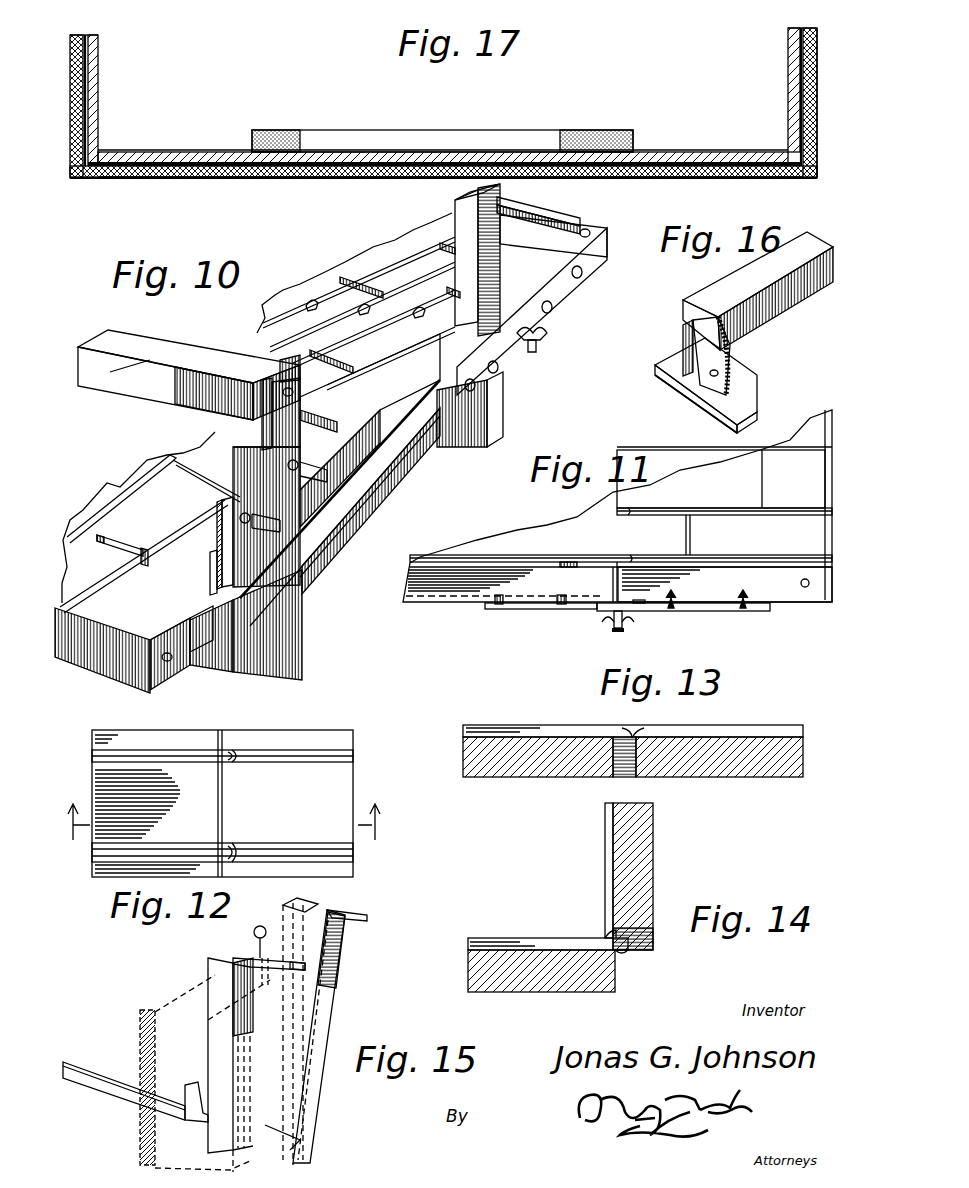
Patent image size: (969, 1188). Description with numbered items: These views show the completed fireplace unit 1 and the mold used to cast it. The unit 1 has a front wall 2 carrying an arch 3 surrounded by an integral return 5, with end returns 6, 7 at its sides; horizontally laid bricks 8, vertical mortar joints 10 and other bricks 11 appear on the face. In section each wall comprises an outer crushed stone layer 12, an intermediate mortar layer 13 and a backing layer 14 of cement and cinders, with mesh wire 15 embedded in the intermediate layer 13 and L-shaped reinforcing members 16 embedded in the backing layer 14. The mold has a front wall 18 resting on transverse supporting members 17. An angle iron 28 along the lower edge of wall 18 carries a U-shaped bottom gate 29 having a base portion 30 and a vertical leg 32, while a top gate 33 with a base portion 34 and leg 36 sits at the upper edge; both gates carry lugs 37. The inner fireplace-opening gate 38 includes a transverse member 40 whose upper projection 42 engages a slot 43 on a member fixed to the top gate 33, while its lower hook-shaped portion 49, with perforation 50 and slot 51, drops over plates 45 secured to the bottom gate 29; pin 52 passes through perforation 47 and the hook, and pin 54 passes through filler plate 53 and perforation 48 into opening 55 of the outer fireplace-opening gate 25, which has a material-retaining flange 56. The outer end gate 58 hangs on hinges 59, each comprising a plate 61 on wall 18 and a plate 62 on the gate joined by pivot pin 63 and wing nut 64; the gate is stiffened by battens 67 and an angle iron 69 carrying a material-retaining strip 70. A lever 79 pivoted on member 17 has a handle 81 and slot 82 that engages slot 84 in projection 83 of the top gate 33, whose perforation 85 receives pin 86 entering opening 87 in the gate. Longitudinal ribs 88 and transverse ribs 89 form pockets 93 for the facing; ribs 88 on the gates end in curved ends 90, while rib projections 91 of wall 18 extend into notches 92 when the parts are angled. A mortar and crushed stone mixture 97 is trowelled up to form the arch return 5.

In FIG. 17, the fireplace unit 1 is at (90, 190).
In FIG. 17, the front wall 2 is at (668, 178).
In FIG. 17, the arch 3 is at (562, 134).
In FIG. 17, the return 5 is at (430, 130).
In FIG. 17, the end wall 6 is at (99, 80).
In FIG. 17, the end wall 7 is at (818, 108).
In FIG. 17, the bricks 8 is at (766, 178).
In FIG. 17, the vertical mortar joints 10 is at (84, 120).
In FIG. 17, the bricks 11 is at (430, 178).
In FIG. 17, the outer layer 12 is at (812, 30).
In FIG. 17, the intermediate layer 13 is at (220, 163).
In FIG. 12, the intermediate layer 13 is at (227, 822).
In FIG. 17, the backing layer 14 is at (312, 156).
In FIG. 17, the mesh wire 15 is at (800, 78).
In FIG. 17, the metal reinforcing members 16 is at (175, 158).
In FIG. 10, the transverse supporting members 17 is at (298, 612).
In FIG. 10, the front wall of the mold 18 is at (118, 498).
In FIG. 11, the front wall of the mold 18 is at (562, 528).
In FIG. 12, the front wall of the mold 18 is at (222, 803).
In FIG. 13, the front wall of the mold 18 is at (522, 772).
In FIG. 14, the front wall of the mold 18 is at (530, 986).
In FIG. 10, the outer fireplace-opening gate 25 is at (102, 632).
In FIG. 10, the angle iron 28 is at (322, 532).
In FIG. 10, the bottom gate member 29 is at (372, 440).
In FIG. 11, the bottom gate member 29 is at (478, 604).
In FIG. 10, the base portion 30 is at (398, 412).
In FIG. 11, the base portion 30 is at (434, 592).
In FIG. 10, the vertical leg 32 is at (498, 262).
In FIG. 11, the vertical leg 32 is at (600, 567).
In FIG. 16, the top gate 33 is at (762, 390).
In FIG. 15, the top gate 33 is at (78, 1070).
In FIG. 16, the base portion 34 is at (694, 390).
In FIG. 15, the leg 36 is at (208, 968).
In FIG. 10, the lugs 37 is at (420, 316).
In FIG. 11, the lugs 37 is at (556, 557).
In FIG. 15, the lugs 37 is at (186, 1094).
In FIG. 10, the inner gate 38 is at (123, 382).
In FIG. 10, the transverse member 40 is at (138, 346).
In FIG. 16, the transverse member 40 is at (806, 238).
In FIG. 16, the projections 42 is at (684, 344).
In FIG. 16, the slots 43 is at (732, 342).
In FIG. 10, the plates 45 is at (332, 546).
In FIG. 10, the perforation 47 is at (277, 476).
In FIG. 10, the perforation 48 is at (221, 538).
In FIG. 10, the hook-shaped portion 49 is at (320, 380).
In FIG. 10, the perforation 50 is at (284, 372).
In FIG. 10, the slot 51 is at (264, 400).
In FIG. 10, the pin 52 is at (384, 496).
In FIG. 10, the filler plate 53 is at (235, 478).
In FIG. 10, the pin 54 is at (292, 512).
In FIG. 10, the opening 55 is at (168, 662).
In FIG. 10, the material-retaining flanges 56 is at (92, 642).
In FIG. 10, the outer end gate 58 is at (390, 264).
In FIG. 11, the outer end gate 58 is at (786, 590).
In FIG. 12, the outer end gate 58 is at (336, 776).
In FIG. 13, the outer end gate 58 is at (732, 774).
In FIG. 14, the outer end gate 58 is at (646, 846).
In FIG. 15, the outer end gate 58 is at (156, 1012).
In FIG. 10, the hinge 59 is at (552, 323).
In FIG. 11, the hinge 59 is at (582, 620).
In FIG. 10, the plate 61 is at (486, 380).
In FIG. 11, the plate 61 is at (520, 610).
In FIG. 10, the second plate 62 is at (586, 302).
In FIG. 11, the second plate 62 is at (730, 612).
In FIG. 10, the pivot pin 63 is at (536, 348).
In FIG. 11, the pivot pin 63 is at (620, 630).
In FIG. 10, the wing nut 64 is at (548, 336).
In FIG. 11, the wing nut 64 is at (640, 624).
In FIG. 10, the battens 67 is at (596, 276).
In FIG. 15, the battens 67 is at (306, 1140).
In FIG. 10, the angle irons 69 is at (600, 242).
In FIG. 11, the angle irons 69 is at (826, 487).
In FIG. 10, the material-retaining strips 70 is at (502, 212).
In FIG. 11, the material-retaining strips 70 is at (826, 430).
In FIG. 15, the upright lever 79 is at (330, 1016).
In FIG. 15, the handle portion 81 is at (350, 914).
In FIG. 15, the open-ended slot 82 is at (310, 968).
In FIG. 15, the projection 83 is at (268, 990).
In FIG. 15, the open-ended slot 84 is at (302, 976).
In FIG. 15, the perforation 85 is at (330, 942).
In FIG. 15, the pin 86 is at (254, 936).
In FIG. 15, the opening 87 is at (206, 1022).
In FIG. 10, the longitudinal ribs 88 is at (385, 308).
In FIG. 11, the longitudinal ribs 88 is at (494, 556).
In FIG. 12, the longitudinal ribs 88 is at (120, 736).
In FIG. 13, the longitudinal ribs 88 is at (510, 733).
In FIG. 14, the longitudinal ribs 88 is at (606, 876).
In FIG. 11, the transverse ribs 89 is at (694, 540).
In FIG. 10, the curved inner ends 90 is at (140, 556).
In FIG. 12, the curved inner ends 90 is at (240, 764).
In FIG. 13, the curved inner ends 90 is at (642, 730).
In FIG. 14, the curved inner ends 90 is at (606, 926).
In FIG. 10, the projecting rib portions 91 is at (150, 562).
In FIG. 12, the projecting rib portions 91 is at (232, 766).
In FIG. 13, the projecting rib portions 91 is at (624, 730).
In FIG. 14, the projecting rib portions 91 is at (620, 958).
In FIG. 12, the notches 92 is at (236, 748).
In FIG. 13, the notches 92 is at (630, 778).
In FIG. 14, the notches 92 is at (648, 946).
In FIG. 11, the pockets 93 is at (721, 479).
In FIG. 17, the mortar cement and crushed stone mixture 97 is at (520, 130).